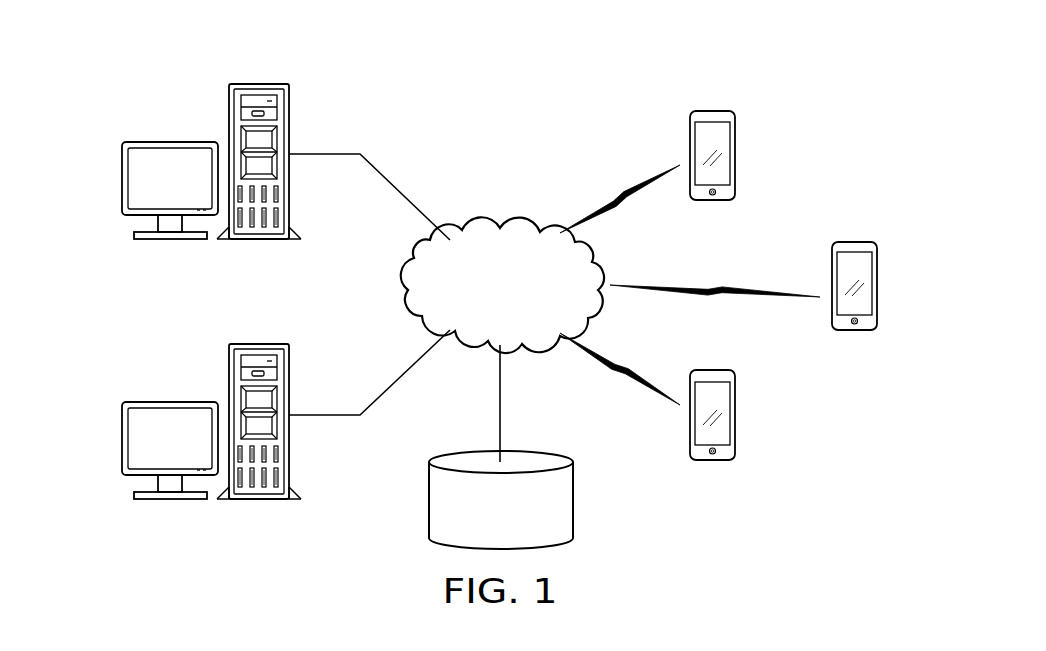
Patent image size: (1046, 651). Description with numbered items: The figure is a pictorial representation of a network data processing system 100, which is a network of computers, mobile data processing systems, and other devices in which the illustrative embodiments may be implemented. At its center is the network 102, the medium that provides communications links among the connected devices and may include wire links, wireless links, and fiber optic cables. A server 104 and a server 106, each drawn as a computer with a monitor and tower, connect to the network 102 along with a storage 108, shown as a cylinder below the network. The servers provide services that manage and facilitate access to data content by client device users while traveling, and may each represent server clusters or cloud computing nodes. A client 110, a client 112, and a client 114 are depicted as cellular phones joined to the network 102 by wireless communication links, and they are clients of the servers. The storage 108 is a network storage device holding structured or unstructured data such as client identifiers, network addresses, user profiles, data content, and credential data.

The network data processing system 100 is at (362, 58).
The network 102 is at (475, 232).
The server 104 is at (122, 182).
The server 106 is at (122, 437).
The storage 108 is at (429, 497).
The client 110 is at (735, 155).
The client 112 is at (877, 283).
The client 114 is at (737, 427).